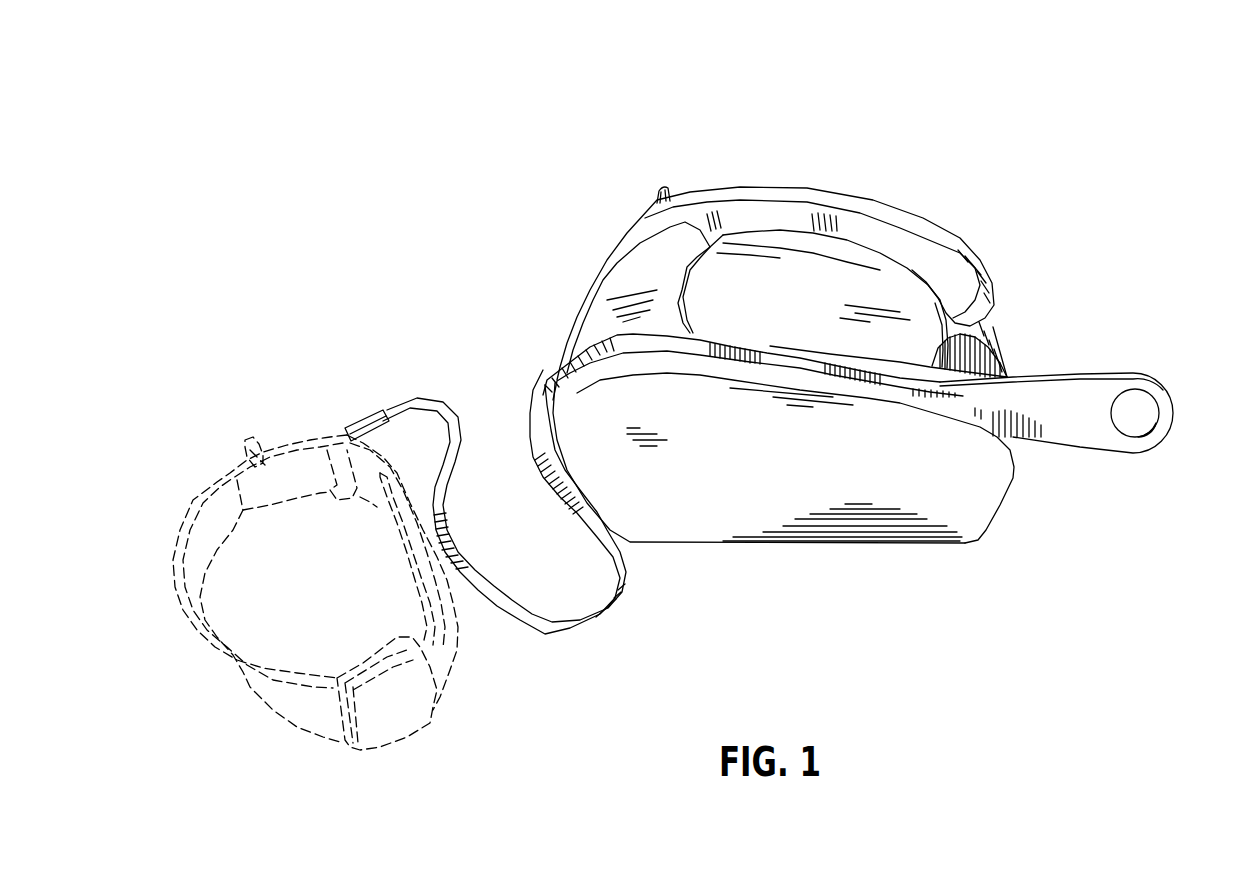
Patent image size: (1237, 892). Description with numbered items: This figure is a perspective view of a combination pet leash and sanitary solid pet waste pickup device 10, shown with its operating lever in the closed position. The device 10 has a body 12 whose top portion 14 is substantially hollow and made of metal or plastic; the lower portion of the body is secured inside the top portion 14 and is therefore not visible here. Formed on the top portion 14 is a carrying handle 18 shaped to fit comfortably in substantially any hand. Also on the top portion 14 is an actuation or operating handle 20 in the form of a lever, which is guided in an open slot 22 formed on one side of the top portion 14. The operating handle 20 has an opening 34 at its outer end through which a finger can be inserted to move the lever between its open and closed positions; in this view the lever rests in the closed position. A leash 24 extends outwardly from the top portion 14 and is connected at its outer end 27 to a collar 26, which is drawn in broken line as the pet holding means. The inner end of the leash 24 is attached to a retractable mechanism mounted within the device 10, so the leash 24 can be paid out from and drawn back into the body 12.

The combination pet leash and sanitary solid pet waste pickup device 10 is at (957, 203).
The body 12 is at (728, 485).
The top portion 14 is at (985, 348).
The carrying handle 18 is at (797, 228).
The actuation or operating handle 20 is at (1088, 392).
The open slot 22 is at (612, 333).
The leash 24 is at (550, 632).
The collar 26 is at (300, 703).
The outer end of the leash 27 is at (357, 425).
The opening 34 is at (1153, 415).